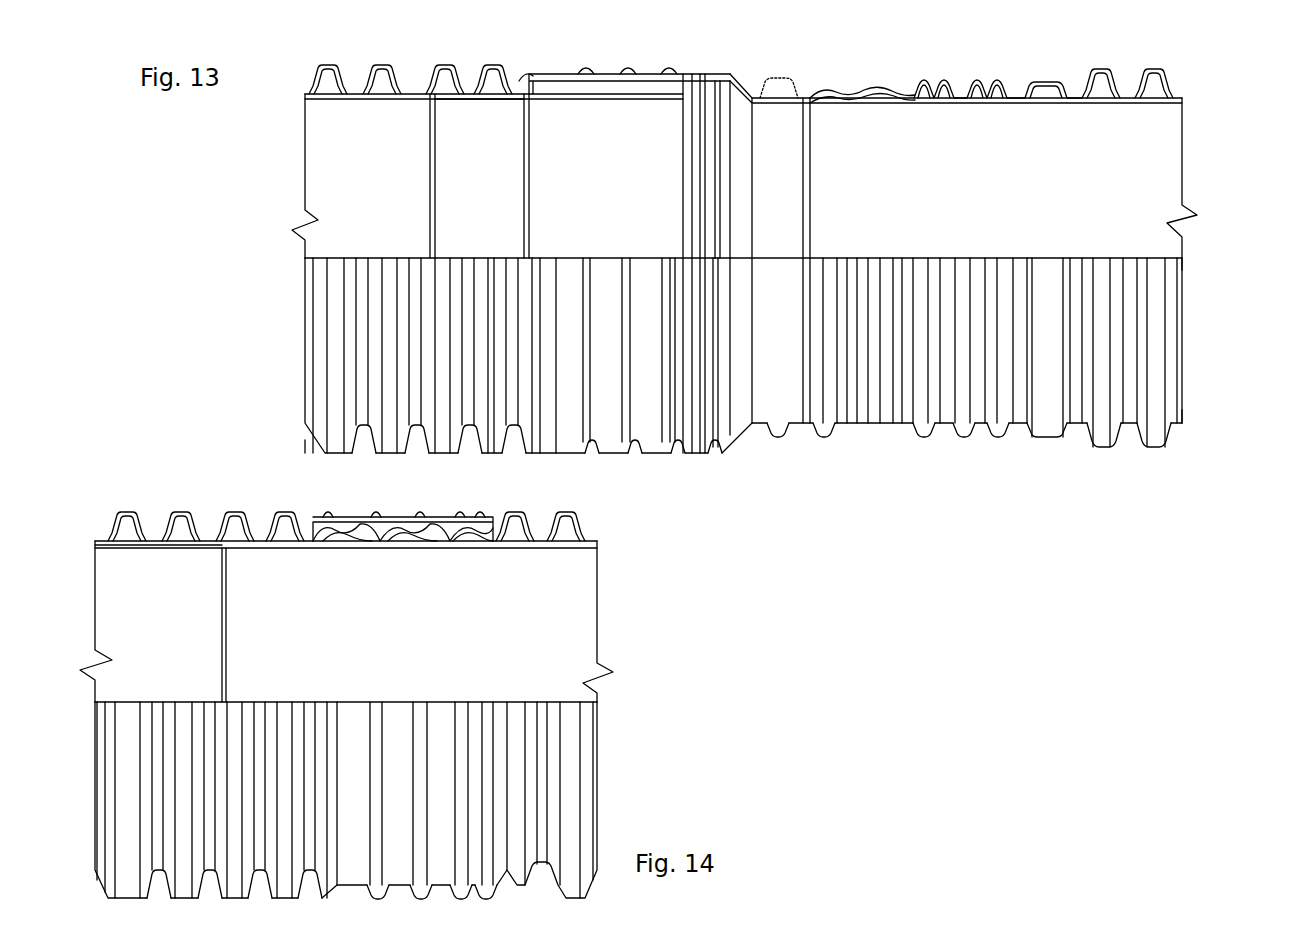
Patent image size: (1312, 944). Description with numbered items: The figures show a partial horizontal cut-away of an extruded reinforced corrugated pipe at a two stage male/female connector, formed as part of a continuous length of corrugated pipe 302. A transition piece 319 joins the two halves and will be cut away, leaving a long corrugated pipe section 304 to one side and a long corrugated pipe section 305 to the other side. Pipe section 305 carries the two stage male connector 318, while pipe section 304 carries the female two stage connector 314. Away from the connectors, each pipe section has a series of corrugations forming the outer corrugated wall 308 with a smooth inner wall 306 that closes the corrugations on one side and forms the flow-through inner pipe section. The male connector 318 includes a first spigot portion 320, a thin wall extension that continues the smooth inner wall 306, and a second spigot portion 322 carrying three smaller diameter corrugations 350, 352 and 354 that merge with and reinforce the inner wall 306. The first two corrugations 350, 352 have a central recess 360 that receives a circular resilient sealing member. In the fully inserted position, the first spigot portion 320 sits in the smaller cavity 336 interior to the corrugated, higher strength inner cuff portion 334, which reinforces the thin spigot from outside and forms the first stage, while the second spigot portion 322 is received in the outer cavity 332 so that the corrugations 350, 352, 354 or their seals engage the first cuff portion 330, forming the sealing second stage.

In FIG. 13, the continuous length of corrugated pipe 302 is at (1045, 57).
In FIG. 13, the corrugated pipe section 304 is at (478, 334).
In FIG. 13, the corrugated pipe section 305 is at (1103, 339).
In FIG. 13, the smooth inner wall 306 is at (345, 104).
In FIG. 13, the outer corrugated wall 308 is at (318, 54).
In FIG. 13, the female two stage connector 314 is at (606, 423).
In FIG. 14, the female two stage connector 314 is at (323, 505).
In FIG. 13, the two stage male connector 318 is at (845, 400).
In FIG. 14, the two stage male connector 318 is at (442, 578).
In FIG. 13, the transition piece 319 is at (772, 150).
In FIG. 14, the first spigot portion 320 is at (268, 550).
In FIG. 14, the second spigot portion 322 is at (373, 550).
In FIG. 13, the first cuff portion 330 is at (605, 84).
In FIG. 13, the outer cavity 332 is at (659, 222).
In FIG. 13, the inner cuff portion 334 is at (470, 101).
In FIG. 13, the smaller cavity 336 is at (492, 207).
In FIG. 13, the corrugation 350 is at (923, 101).
In FIG. 13, the corrugation 352 is at (981, 104).
In FIG. 13, the corrugation 354 is at (1040, 104).
In FIG. 13, the central recess 360 is at (981, 88).